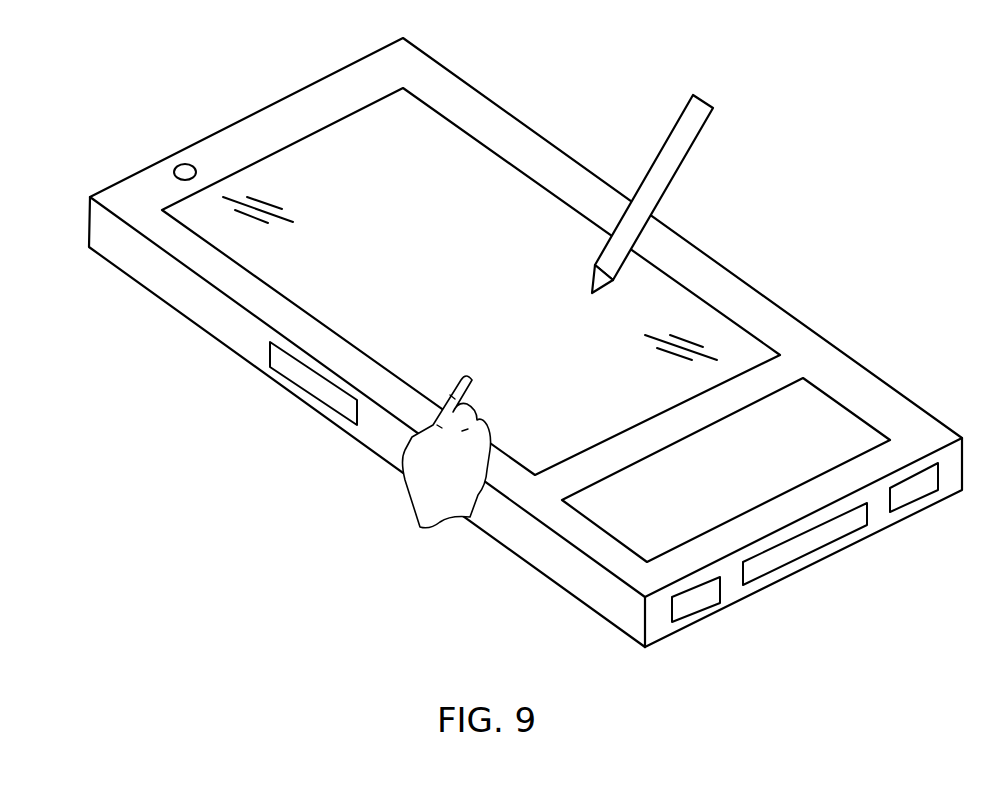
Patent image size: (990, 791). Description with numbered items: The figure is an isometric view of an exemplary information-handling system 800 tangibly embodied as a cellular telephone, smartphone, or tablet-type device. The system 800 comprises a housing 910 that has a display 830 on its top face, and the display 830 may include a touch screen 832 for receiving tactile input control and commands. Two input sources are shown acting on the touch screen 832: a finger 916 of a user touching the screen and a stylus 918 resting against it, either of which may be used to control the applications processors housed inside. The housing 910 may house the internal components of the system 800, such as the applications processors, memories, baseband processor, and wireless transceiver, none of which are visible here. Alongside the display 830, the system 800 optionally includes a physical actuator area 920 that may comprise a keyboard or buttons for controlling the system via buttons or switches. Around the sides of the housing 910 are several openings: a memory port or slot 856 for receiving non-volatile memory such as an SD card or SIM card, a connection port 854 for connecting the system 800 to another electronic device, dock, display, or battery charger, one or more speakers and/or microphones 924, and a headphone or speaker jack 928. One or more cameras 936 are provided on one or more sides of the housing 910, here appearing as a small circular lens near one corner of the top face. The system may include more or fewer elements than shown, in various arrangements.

The information-handling system 800 is at (513, 348).
The display 830 is at (378, 151).
The touch screen 832 is at (514, 290).
The connection port 854 is at (820, 548).
The memory port or slot 856 is at (315, 380).
The housing 910 is at (343, 66).
The finger 916 is at (463, 372).
The stylus 918 is at (685, 134).
The physical actuator area 920 is at (830, 427).
The speakers and/or microphones 924 is at (917, 500).
The headphone or speaker jack 928 is at (697, 613).
The cameras 936 is at (179, 165).